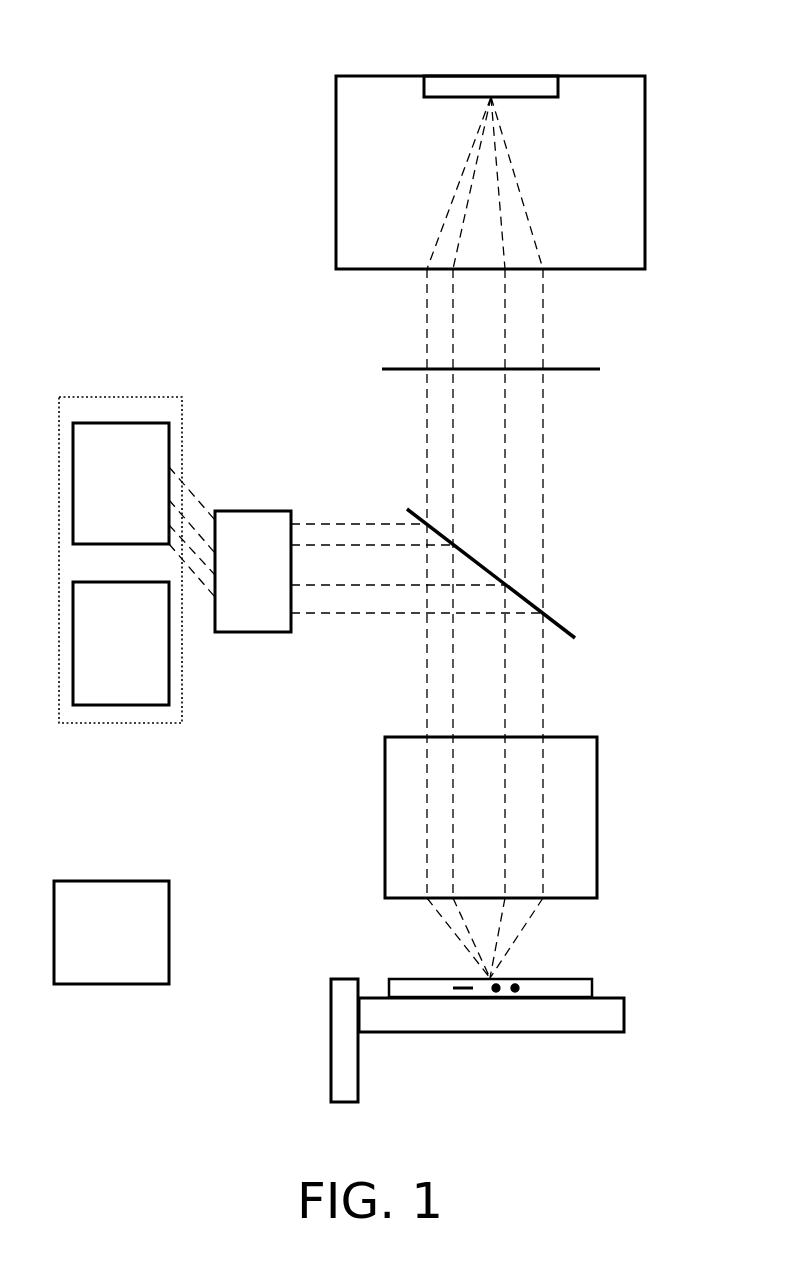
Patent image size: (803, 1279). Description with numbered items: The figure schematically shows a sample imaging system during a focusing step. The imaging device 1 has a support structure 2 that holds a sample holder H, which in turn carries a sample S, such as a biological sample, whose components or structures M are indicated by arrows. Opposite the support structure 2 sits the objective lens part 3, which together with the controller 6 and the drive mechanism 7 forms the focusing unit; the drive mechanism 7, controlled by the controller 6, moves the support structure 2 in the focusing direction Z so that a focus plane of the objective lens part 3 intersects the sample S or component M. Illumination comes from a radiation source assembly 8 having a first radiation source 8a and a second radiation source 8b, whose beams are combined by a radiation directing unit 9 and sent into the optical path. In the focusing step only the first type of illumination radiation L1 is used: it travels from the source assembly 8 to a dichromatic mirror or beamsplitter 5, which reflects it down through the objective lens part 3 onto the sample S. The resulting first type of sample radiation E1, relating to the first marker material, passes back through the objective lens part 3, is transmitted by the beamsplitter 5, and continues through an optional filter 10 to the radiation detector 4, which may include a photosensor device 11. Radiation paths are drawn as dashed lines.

The imaging device 1 is at (207, 252).
The support structure 2 is at (533, 1032).
The objective lens part 3 is at (598, 817).
The radiation detector 4 is at (645, 172).
The dichromatic mirror or beamsplitter 5 is at (567, 627).
The controller 6 is at (119, 944).
The drive mechanism 7 is at (331, 1080).
The radiation source assembly 8 is at (121, 397).
The first radiation source 8a is at (136, 499).
The second radiation source 8b is at (136, 657).
The radiation directing unit 9 is at (261, 582).
The filter 10 is at (587, 368).
The photosensor device 11 is at (533, 87).
The first type of illumination radiation L1 is at (198, 502).
The first type of sample radiation E1 is at (427, 437).
The focusing direction Z is at (372, 893).
The sample components M is at (500, 978).
The sample holder H is at (582, 984).
The sample S is at (593, 988).